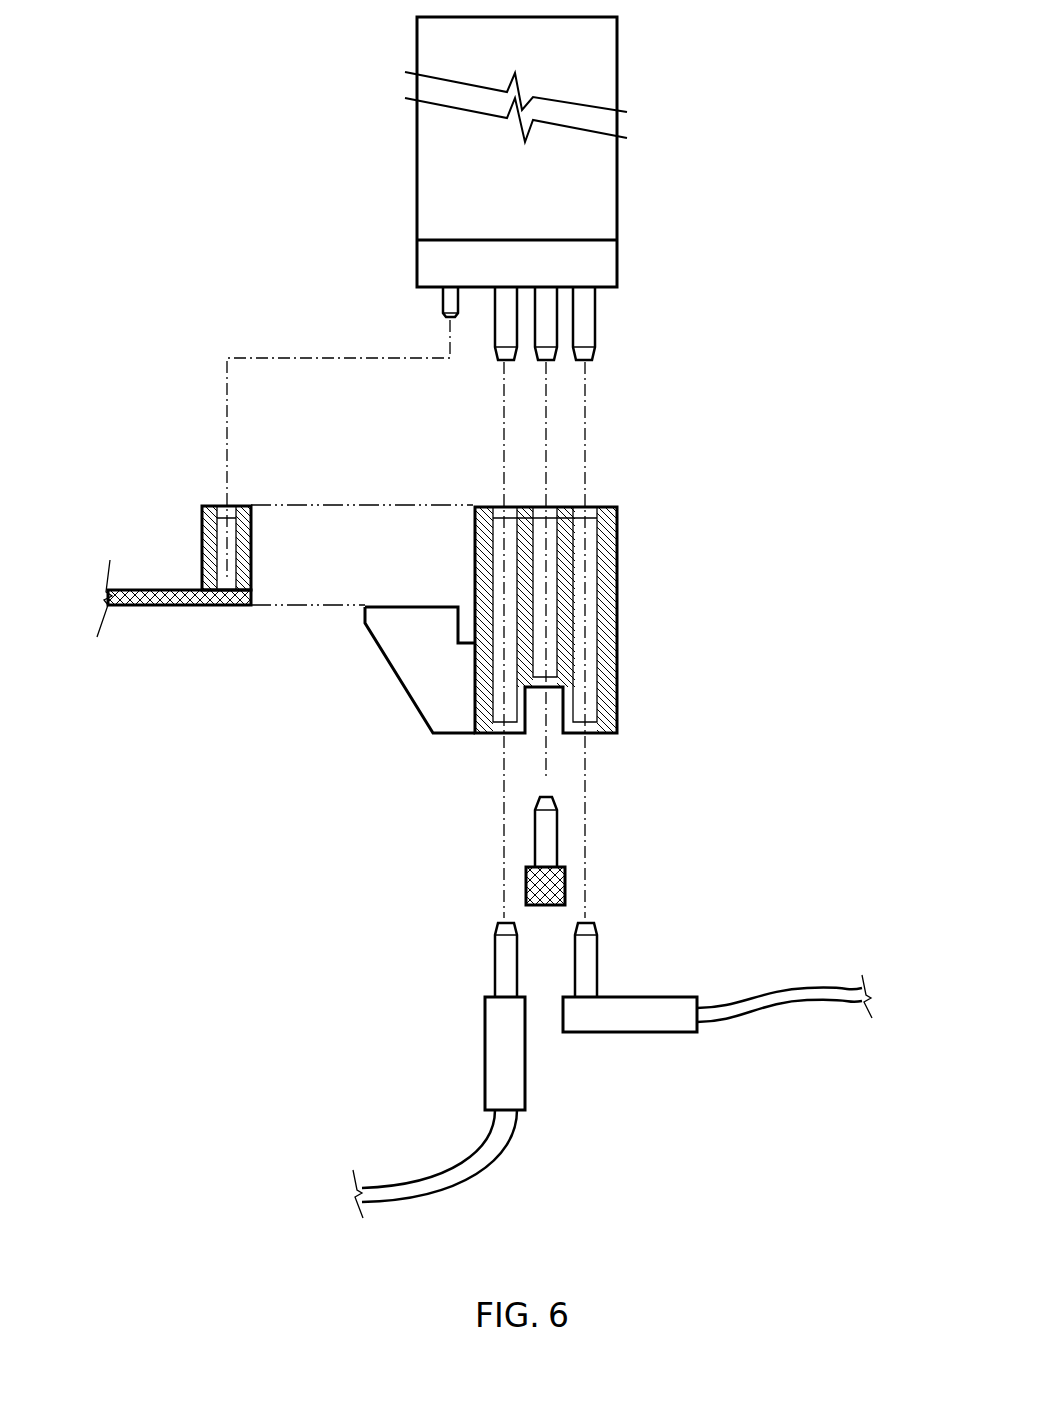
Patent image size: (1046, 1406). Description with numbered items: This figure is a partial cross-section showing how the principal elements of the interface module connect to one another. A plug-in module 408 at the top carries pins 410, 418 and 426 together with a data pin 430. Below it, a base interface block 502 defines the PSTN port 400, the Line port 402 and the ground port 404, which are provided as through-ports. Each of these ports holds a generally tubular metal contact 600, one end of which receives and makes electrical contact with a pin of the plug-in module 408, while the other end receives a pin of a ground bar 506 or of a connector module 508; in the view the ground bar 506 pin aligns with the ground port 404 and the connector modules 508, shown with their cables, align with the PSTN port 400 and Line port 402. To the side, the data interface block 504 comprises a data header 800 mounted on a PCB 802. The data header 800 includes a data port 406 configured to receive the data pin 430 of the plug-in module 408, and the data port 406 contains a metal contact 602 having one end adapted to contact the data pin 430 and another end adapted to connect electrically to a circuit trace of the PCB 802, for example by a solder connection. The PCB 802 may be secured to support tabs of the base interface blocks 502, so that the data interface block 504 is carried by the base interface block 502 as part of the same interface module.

The plug-in module 408 is at (516, 152).
The data pin 430 is at (444, 303).
The pin 418 is at (496, 356).
The pin 426 is at (541, 362).
The pin 410 is at (594, 360).
The Line port 402 is at (497, 506).
The ground port 404 is at (551, 506).
The PSTN port 400 is at (592, 506).
The tubular metal contact 600 is at (612, 560).
The base interface block 502 is at (612, 615).
The data interface block 504 is at (122, 500).
The data port 406 is at (222, 505).
The data header 800 is at (238, 505).
The metal contact 602 is at (243, 556).
The PCB 802 is at (170, 605).
The ground bar 506 is at (565, 883).
The connector module 508 is at (493, 1052).